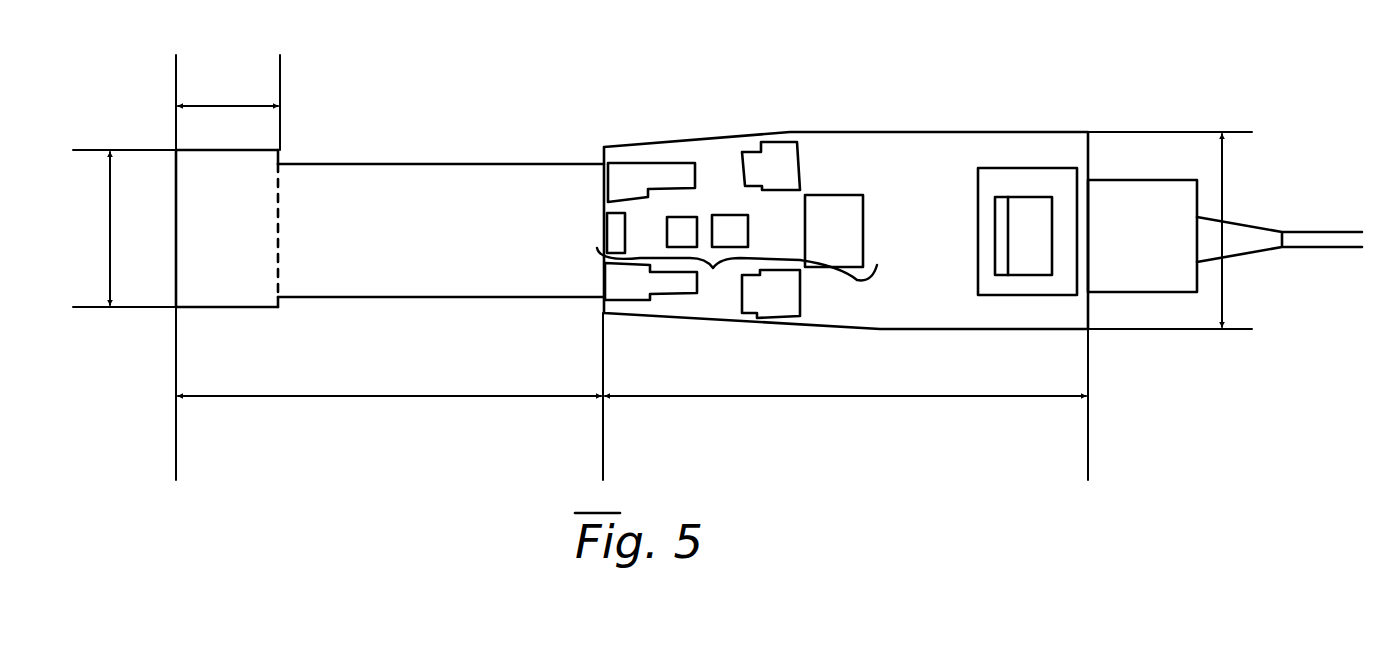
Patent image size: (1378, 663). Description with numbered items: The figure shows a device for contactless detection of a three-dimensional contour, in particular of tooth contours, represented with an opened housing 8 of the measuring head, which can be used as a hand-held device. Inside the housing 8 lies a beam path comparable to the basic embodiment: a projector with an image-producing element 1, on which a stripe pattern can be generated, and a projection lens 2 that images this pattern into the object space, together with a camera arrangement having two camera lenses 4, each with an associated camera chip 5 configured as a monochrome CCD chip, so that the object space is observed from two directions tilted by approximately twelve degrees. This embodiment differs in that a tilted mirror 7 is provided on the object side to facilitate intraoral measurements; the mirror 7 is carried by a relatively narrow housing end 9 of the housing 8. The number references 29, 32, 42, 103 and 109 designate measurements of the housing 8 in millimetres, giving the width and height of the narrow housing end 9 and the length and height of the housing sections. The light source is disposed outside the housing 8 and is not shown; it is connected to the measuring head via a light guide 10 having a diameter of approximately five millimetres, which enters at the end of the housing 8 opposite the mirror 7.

The image-producing element 1 is at (1077, 238).
The projection lens 2 is at (737, 278).
The camera lenses 4 is at (652, 175).
The camera chip 5 is at (803, 162).
The tilted mirror 7 is at (228, 316).
The housing 8 is at (938, 329).
The housing end 9 is at (465, 300).
The light guide 10 is at (1327, 255).
The measurement of the housing 29 is at (228, 262).
The measurement of the housing 32 is at (108, 228).
The measurement of the housing 42 is at (1187, 230).
The measurement of the housing 103 is at (390, 396).
The measurement of the housing 109 is at (846, 404).